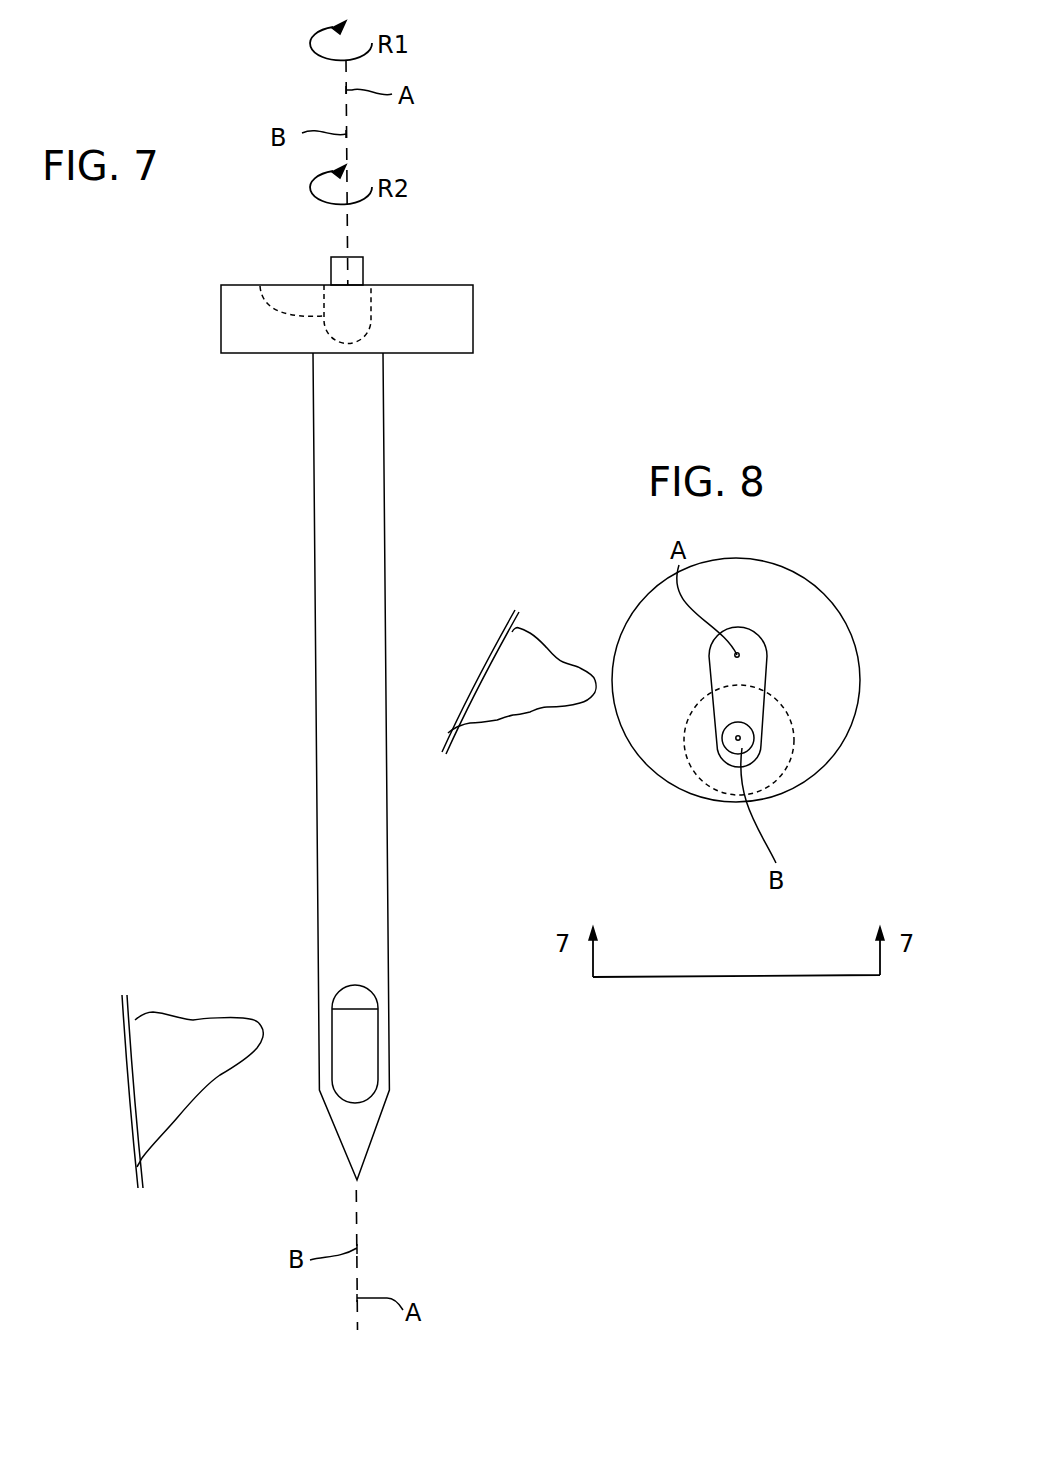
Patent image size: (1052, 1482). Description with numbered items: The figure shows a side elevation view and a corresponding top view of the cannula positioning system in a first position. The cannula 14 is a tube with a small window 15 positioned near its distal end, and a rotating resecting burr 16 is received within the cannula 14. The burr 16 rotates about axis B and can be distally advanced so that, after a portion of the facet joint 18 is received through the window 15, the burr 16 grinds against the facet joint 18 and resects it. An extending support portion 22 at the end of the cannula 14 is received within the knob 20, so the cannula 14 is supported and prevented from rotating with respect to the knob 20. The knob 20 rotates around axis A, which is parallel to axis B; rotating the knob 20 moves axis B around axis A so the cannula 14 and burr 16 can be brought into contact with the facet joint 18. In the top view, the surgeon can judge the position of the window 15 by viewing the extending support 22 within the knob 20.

In FIG. 7, the cannula 14 is at (325, 703).
In FIG. 8, the cannula 14 is at (682, 763).
In FIG. 7, the window 15 is at (350, 1073).
In FIG. 7, the resecting burr 16 is at (341, 267).
In FIG. 7, the facet joint 18 is at (202, 1038).
In FIG. 8, the facet joint 18 is at (548, 698).
In FIG. 7, the knob 20 is at (407, 305).
In FIG. 8, the knob 20 is at (656, 606).
In FIG. 7, the extending support portion 22 is at (260, 286).
In FIG. 8, the extending support portion 22 is at (765, 667).